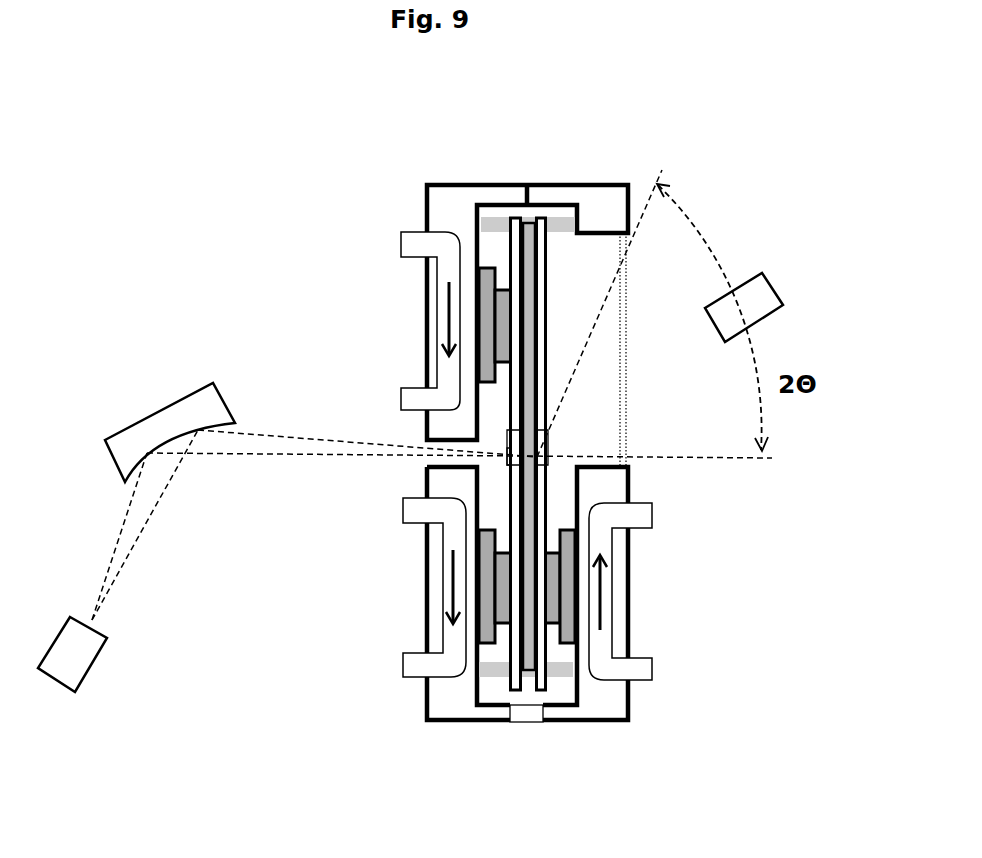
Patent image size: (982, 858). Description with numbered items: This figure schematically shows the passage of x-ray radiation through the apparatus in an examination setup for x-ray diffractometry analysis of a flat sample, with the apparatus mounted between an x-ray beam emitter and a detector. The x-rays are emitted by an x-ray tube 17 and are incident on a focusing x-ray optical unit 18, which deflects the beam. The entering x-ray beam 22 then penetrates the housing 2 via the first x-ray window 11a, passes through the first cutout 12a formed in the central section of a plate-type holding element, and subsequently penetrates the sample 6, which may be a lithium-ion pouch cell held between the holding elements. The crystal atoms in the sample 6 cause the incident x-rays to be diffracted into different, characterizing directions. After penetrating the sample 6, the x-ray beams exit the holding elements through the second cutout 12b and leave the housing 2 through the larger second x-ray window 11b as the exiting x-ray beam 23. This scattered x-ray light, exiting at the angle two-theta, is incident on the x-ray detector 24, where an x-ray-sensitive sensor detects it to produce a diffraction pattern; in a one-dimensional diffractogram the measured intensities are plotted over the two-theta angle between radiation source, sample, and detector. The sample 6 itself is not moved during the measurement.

The housing 2 is at (452, 208).
The sample 6 is at (530, 223).
The first x-ray window 11a is at (507, 457).
The second x-ray window 11b is at (627, 323).
The first cutout 12a is at (507, 452).
The second cutout 12b is at (545, 452).
The x-ray tube 17 is at (80, 658).
The focusing x-ray optical unit 18 is at (167, 420).
The entering x-ray beam 22 is at (283, 447).
The exiting x-ray beam 23 is at (712, 423).
The x-ray detector 24 is at (762, 302).